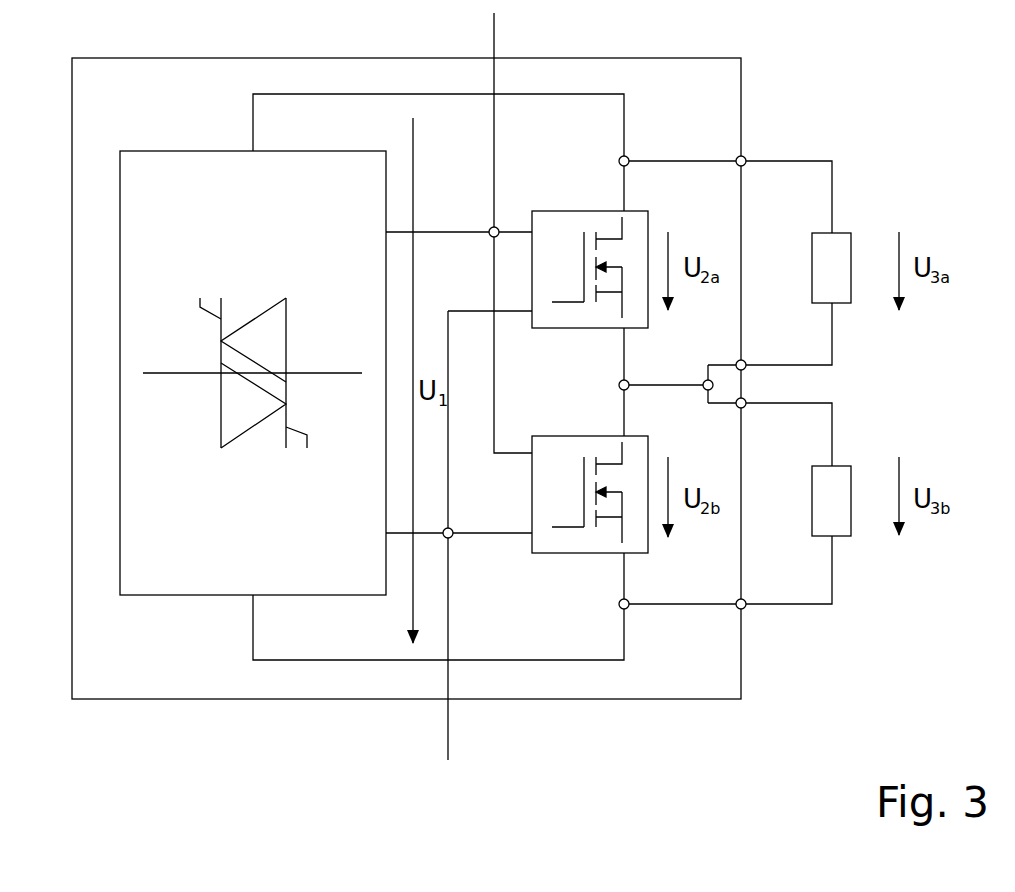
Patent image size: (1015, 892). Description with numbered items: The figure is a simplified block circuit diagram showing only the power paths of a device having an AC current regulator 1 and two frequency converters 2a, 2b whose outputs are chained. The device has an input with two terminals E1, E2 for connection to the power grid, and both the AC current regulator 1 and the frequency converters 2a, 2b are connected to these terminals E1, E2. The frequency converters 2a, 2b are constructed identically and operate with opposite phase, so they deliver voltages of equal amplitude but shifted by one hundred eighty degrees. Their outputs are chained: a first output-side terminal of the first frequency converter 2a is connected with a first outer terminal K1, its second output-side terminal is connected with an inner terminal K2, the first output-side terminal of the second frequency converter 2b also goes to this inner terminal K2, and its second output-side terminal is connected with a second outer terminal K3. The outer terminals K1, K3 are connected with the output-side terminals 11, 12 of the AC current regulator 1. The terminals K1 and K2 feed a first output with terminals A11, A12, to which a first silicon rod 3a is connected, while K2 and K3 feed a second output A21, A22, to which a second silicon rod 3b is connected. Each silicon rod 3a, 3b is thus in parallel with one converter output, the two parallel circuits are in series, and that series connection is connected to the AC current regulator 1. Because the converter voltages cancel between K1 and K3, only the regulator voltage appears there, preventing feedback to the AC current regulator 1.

The AC current regulator 1 is at (334, 560).
The output-side terminal of the AC current regulator 11 is at (256, 168).
The output-side terminal of the AC current regulator 12 is at (256, 578).
The first frequency converter 2a is at (570, 239).
The second frequency converter 2b is at (571, 467).
The first silicon rod 3a is at (848, 283).
The second silicon rod 3b is at (848, 512).
The first outer terminal K1 is at (619, 161).
The inner terminal K2 is at (619, 385).
The second outer terminal K3 is at (619, 604).
The terminal of the first output A11 is at (745, 157).
The terminal of the first output A12 is at (745, 361).
The terminal of the second output A21 is at (744, 407).
The terminal of the second output A22 is at (745, 608).
The input terminal E1 is at (513, 231).
The input terminal E2 is at (468, 540).